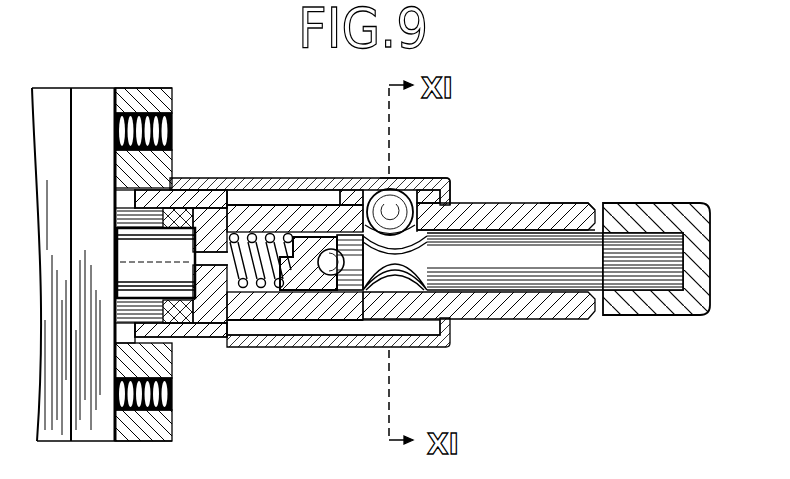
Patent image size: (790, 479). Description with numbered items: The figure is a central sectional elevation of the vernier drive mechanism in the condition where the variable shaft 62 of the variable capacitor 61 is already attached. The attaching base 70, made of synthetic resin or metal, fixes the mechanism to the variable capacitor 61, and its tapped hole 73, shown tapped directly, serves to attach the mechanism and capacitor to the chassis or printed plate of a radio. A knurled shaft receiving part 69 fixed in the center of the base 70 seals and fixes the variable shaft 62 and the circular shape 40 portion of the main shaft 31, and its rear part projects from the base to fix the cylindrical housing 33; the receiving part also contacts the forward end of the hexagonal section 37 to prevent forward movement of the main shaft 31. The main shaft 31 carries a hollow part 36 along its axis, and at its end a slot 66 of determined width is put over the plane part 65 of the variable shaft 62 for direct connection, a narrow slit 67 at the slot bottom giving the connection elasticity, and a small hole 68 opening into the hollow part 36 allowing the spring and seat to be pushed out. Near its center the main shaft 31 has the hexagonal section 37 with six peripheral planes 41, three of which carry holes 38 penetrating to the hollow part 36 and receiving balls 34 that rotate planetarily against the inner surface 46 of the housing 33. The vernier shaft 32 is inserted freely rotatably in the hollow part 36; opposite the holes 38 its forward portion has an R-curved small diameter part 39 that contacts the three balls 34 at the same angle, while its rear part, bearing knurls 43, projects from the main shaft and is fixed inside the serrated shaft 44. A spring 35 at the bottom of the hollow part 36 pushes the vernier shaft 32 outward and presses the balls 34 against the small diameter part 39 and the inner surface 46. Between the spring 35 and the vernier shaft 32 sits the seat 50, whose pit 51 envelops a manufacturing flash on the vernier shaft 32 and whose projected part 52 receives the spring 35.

The variable capacitor 61 is at (88, 89).
The attaching base 70 is at (143, 89).
The tapped hole 73 is at (172, 120).
The variable shaft 62 is at (124, 206).
The shaft receiving part 69 is at (187, 179).
The slot 66 is at (227, 191).
The small hole 68 is at (257, 195).
The spring 35 is at (302, 191).
The hexagonal section 37 is at (348, 205).
The peripheral planes 41 is at (365, 203).
The cylindrical housing 33 is at (405, 177).
The balls 34 is at (424, 184).
The holes 38 is at (433, 216).
The vernier shaft 32 is at (520, 215).
The main shaft 31 is at (560, 210).
The serrated shaft 44 is at (638, 204).
The knurls 43 is at (642, 273).
The hollow part 36 is at (527, 294).
The circular shape 40 is at (455, 316).
The small diameter part 39 is at (442, 347).
The inner surface 46 is at (398, 266).
The pit 51 is at (340, 293).
The seat 50 is at (317, 292).
The projected part 52 is at (283, 295).
The slit 67 is at (252, 293).
The plane part 65 is at (183, 338).